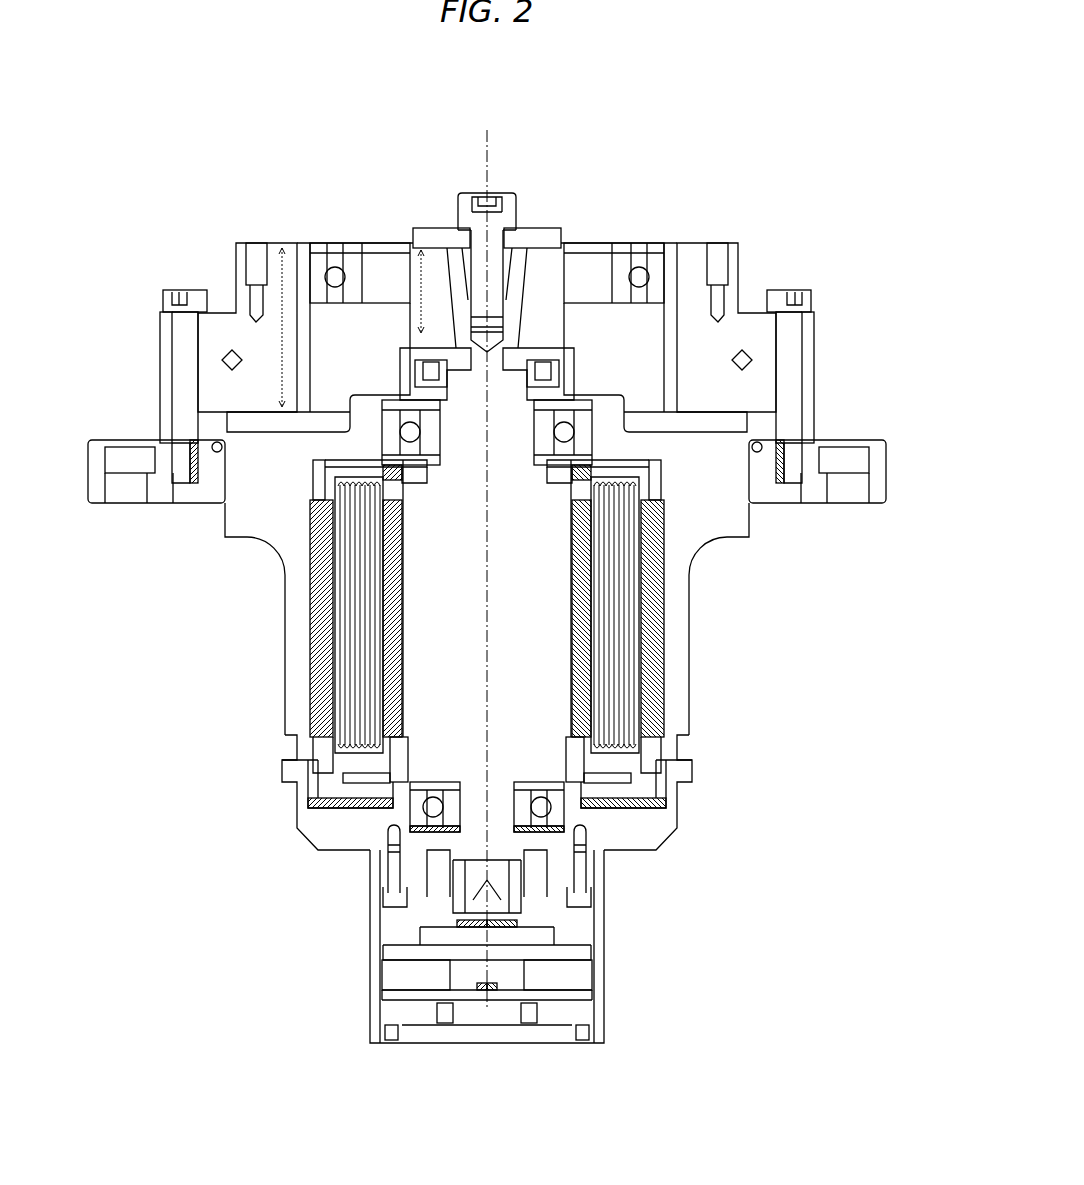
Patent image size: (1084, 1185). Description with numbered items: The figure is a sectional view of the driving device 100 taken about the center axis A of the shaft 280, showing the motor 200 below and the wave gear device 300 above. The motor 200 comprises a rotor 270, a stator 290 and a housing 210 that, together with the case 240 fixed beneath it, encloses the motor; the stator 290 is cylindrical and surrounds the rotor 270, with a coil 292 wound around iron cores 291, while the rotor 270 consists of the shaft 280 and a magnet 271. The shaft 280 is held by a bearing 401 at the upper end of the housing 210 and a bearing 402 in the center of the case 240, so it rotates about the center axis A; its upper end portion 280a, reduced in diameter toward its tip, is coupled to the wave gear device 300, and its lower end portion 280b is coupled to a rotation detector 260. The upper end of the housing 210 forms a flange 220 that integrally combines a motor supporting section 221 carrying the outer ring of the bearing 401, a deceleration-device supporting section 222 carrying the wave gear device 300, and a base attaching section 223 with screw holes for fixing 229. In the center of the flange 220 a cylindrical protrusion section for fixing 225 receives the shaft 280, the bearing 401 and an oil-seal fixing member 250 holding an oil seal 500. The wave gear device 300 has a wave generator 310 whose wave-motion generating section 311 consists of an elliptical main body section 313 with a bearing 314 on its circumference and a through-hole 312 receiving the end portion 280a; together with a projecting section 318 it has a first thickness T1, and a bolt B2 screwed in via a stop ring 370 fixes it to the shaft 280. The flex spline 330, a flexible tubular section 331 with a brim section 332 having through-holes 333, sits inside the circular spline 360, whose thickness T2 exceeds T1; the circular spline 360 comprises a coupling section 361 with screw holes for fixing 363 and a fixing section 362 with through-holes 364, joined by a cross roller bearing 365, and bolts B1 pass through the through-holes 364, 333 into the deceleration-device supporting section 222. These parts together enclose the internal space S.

The driving device 100 is at (908, 103).
The motor 200 is at (703, 688).
The housing 210 is at (690, 652).
The flange 220 is at (945, 598).
The motor supporting section 221 is at (657, 442).
The deceleration-device supporting section 222 is at (792, 472).
The base attaching section 223 is at (880, 500).
The protrusion section for fixing 225 is at (748, 455).
The screw holes for fixing 229 is at (127, 490).
The case 240 is at (686, 818).
The oil-seal fixing member 250 is at (407, 347).
The rotation detector 260 is at (622, 946).
The rotor 270 is at (125, 648).
The magnet 271 is at (396, 660).
The shaft 280 is at (467, 690).
The end portion 280a is at (456, 460).
The end portion 280b is at (478, 800).
The stator 290 is at (113, 570).
The iron cores 291 is at (312, 584).
The coil 292 is at (345, 618).
The wave gear device 300 is at (760, 214).
The wave generator 310 is at (710, 88).
The wave-motion generating section 311 is at (740, 140).
The through-hole 312 is at (520, 246).
The main body section 313 is at (598, 258).
The bearing 314 is at (658, 258).
The projecting section 318 is at (577, 265).
The flex spline 330 is at (898, 337).
The tubular section 331 is at (706, 385).
The brim section 332 is at (742, 418).
The through-holes 333 is at (794, 425).
The circular spline 360 is at (318, 158).
The coupling section 361 is at (256, 262).
The fixing section 362 is at (195, 288).
The screw holes for fixing 363 is at (284, 246).
The through-holes 364 is at (165, 290).
The bearing 365 is at (232, 347).
The stop ring 370 is at (413, 232).
The bearing 401 is at (398, 458).
The bearing 402 is at (412, 813).
The oil seal 500 is at (433, 303).
The center axis A is at (488, 152).
The bolts B1 is at (814, 307).
The bolt B2 is at (478, 193).
The internal space S is at (645, 333).
The first thickness T1 is at (435, 291).
The thickness T2 is at (269, 327).